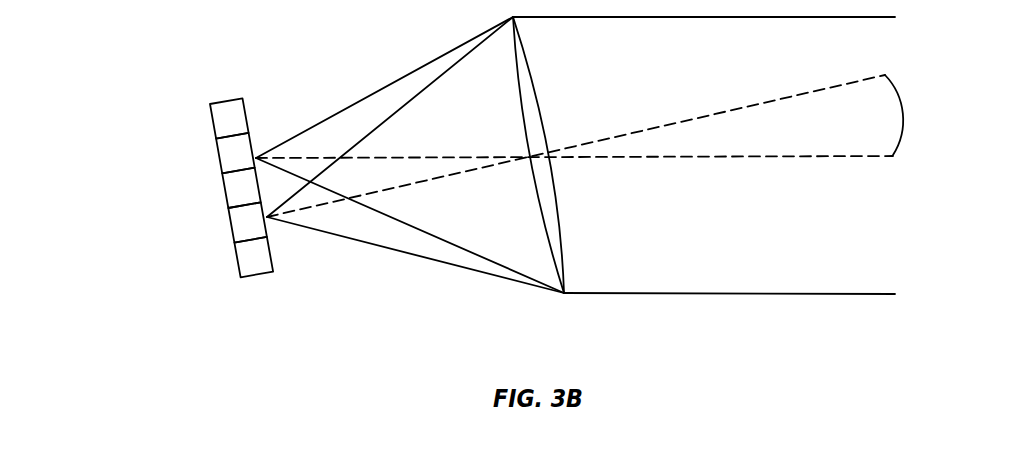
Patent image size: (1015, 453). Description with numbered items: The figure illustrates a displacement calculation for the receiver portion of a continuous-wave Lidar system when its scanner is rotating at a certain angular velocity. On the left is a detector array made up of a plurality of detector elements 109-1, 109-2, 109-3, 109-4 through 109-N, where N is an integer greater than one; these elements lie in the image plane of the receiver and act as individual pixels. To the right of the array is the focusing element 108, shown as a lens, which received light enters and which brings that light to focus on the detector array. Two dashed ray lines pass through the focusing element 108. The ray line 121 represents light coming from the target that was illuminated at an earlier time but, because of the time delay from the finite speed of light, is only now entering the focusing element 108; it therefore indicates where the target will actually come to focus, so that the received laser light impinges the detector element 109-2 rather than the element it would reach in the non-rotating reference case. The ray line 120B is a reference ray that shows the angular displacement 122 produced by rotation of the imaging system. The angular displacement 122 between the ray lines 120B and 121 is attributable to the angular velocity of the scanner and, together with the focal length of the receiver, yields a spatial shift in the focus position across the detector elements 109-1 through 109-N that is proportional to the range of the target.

The detector element 109-1 is at (214, 127).
The detector element 109-2 is at (219, 157).
The detector element 109-3 is at (225, 189).
The detector element 109-4 is at (232, 229).
The detector element 109-N is at (238, 260).
The focusing element 108 is at (543, 120).
The ray line 120B is at (845, 83).
The ray line 121 is at (807, 160).
The angular displacement 122 is at (903, 133).